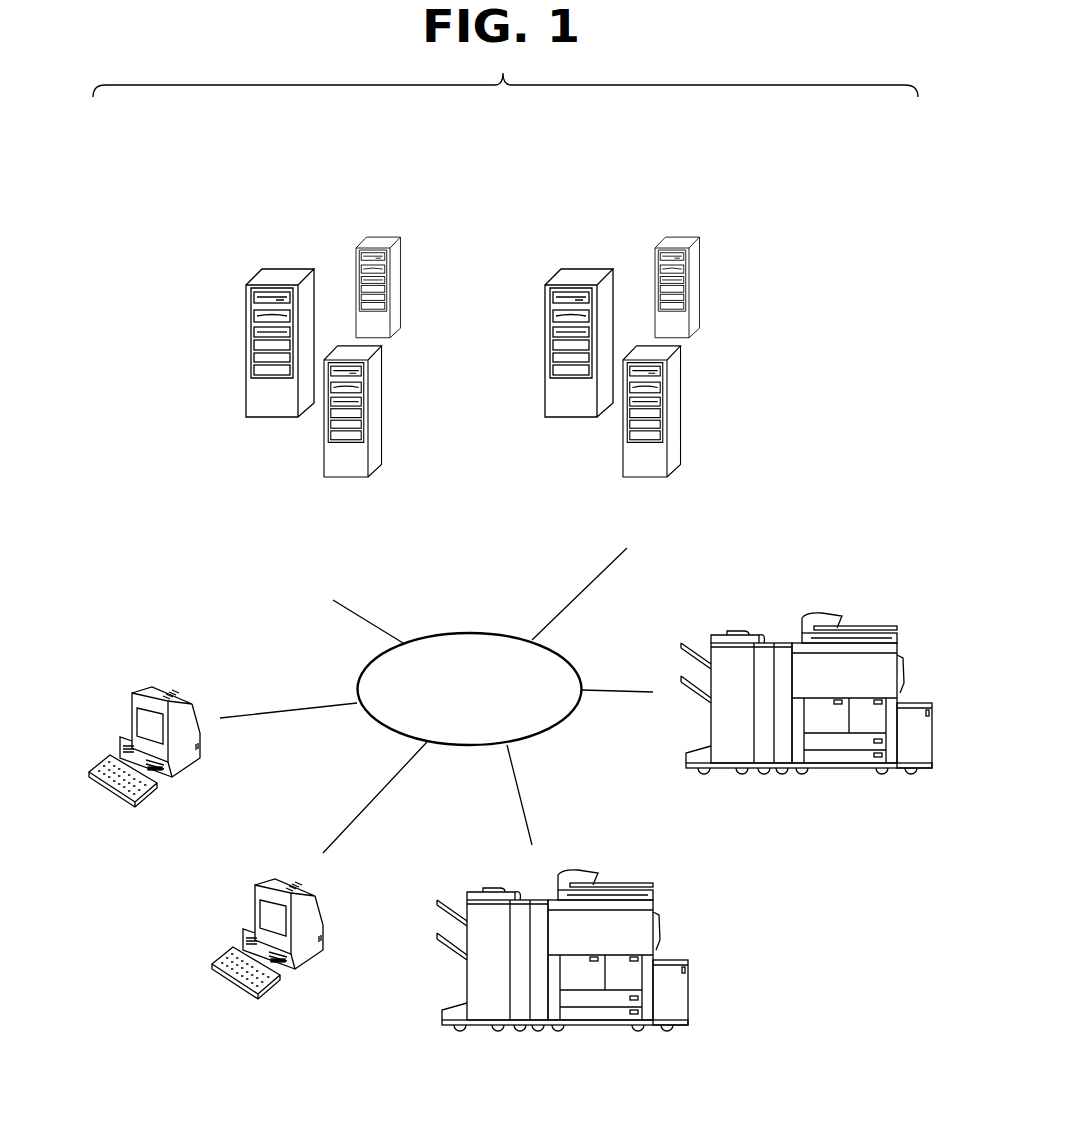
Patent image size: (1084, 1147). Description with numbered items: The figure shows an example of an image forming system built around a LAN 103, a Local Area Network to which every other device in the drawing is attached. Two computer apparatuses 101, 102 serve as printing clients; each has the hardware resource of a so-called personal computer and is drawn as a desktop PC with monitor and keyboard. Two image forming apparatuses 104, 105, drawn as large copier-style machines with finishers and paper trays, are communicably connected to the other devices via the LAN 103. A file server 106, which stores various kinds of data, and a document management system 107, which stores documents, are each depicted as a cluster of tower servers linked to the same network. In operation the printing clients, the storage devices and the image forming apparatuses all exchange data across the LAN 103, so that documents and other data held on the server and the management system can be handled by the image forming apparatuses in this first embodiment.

The computer apparatus 101 is at (135, 688).
The computer apparatus 102 is at (256, 879).
The LAN 103 is at (470, 747).
The image forming apparatus 104 is at (625, 883).
The image forming apparatus 105 is at (869, 626).
The file server 106 is at (684, 367).
The document management system 107 is at (385, 367).